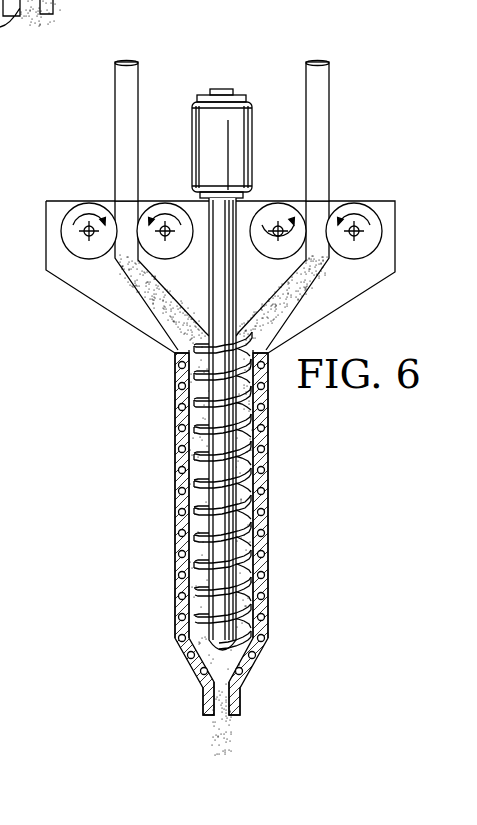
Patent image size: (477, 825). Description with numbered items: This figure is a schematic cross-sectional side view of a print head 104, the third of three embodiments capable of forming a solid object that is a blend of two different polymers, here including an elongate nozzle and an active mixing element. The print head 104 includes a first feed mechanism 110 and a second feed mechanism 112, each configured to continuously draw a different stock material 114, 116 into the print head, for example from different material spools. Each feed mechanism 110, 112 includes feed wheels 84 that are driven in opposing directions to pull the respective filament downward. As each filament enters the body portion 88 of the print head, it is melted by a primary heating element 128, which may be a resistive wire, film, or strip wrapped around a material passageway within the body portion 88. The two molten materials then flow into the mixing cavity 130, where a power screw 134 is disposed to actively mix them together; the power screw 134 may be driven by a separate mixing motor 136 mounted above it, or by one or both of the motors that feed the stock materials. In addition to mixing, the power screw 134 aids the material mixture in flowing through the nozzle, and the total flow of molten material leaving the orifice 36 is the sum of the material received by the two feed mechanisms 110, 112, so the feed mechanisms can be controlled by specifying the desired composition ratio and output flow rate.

The print head 104 is at (345, 39).
The first feed mechanism 110 is at (110, 193).
The second feed mechanism 112 is at (334, 193).
The stock material 114 is at (115, 107).
The stock material 116 is at (329, 135).
The mixing motor 136 is at (192, 115).
The feed wheels 84 is at (62, 231).
The body portion 88 is at (0, 352).
The primary heating element 128 is at (178, 365).
The mixing cavity 130 is at (178, 470).
The power screw 134 is at (263, 504).
The orifice 36 is at (208, 697).